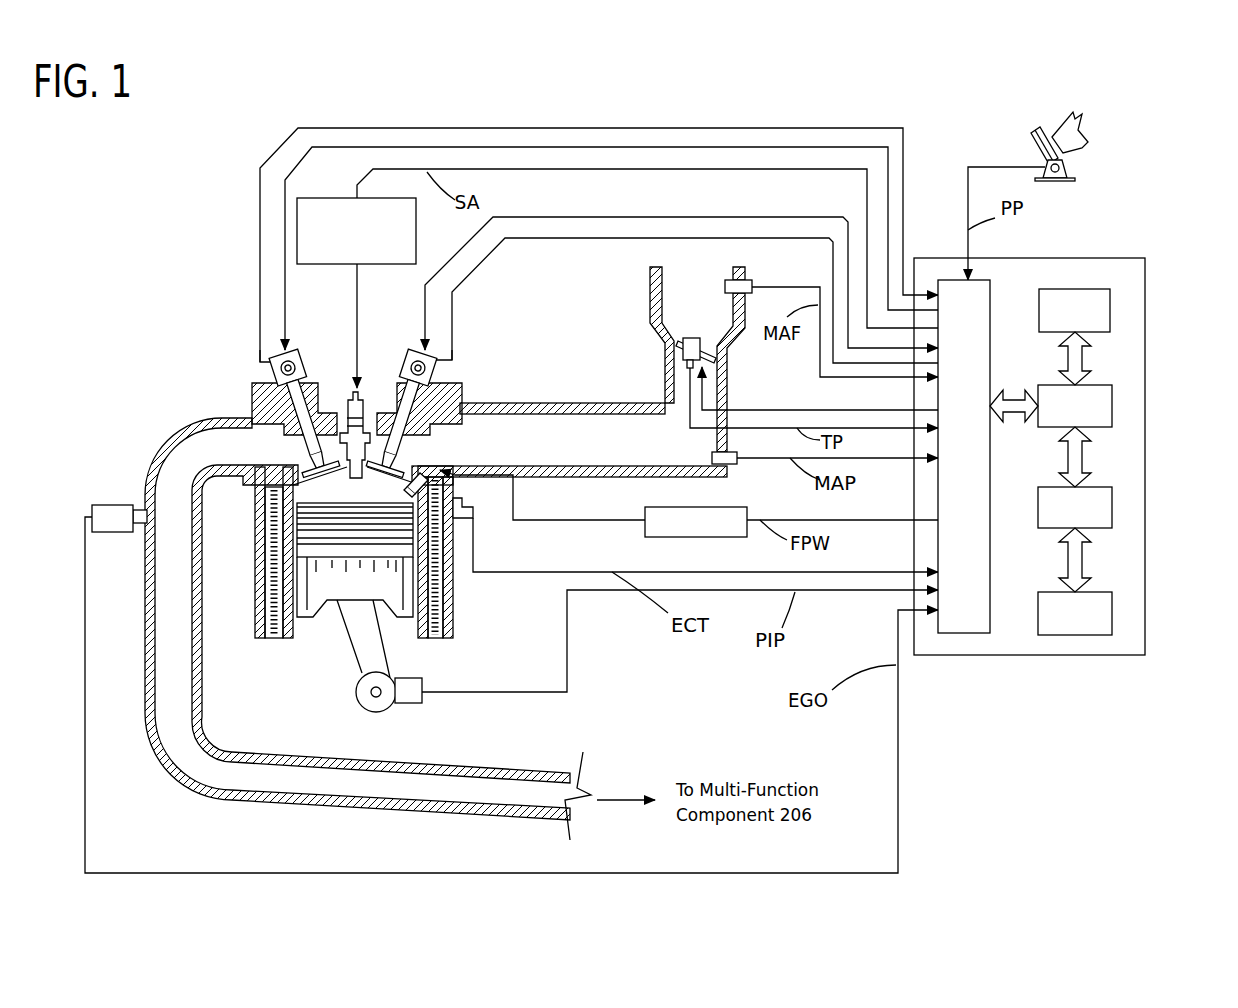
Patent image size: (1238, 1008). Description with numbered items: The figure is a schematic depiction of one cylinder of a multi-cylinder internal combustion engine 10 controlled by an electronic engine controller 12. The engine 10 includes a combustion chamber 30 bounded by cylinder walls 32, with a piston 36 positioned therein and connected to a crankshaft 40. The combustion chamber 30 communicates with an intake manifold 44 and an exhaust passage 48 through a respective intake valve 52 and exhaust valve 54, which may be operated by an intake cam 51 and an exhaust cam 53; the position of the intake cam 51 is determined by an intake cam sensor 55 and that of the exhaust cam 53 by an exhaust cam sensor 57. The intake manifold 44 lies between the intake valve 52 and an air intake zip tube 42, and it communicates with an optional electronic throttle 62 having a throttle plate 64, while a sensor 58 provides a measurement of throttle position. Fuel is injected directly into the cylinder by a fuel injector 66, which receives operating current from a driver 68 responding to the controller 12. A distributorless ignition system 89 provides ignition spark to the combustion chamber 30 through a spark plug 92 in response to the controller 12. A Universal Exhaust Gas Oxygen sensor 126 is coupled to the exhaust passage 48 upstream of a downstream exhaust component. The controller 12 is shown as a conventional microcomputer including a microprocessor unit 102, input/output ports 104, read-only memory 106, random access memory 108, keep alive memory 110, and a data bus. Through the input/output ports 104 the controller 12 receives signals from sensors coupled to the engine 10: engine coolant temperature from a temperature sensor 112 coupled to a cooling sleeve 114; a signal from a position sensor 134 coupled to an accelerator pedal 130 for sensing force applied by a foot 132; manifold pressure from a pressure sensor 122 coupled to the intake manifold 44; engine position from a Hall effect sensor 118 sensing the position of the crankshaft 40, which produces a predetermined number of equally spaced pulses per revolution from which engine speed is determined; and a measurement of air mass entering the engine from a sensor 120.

The internal combustion engine 10 is at (190, 340).
The electronic engine controller 12 is at (1137, 257).
The combustion chamber 30 is at (268, 579).
The cylinder walls 32 is at (293, 630).
The piston 36 is at (337, 590).
The crankshaft 40 is at (367, 710).
The air intake zip tube 42 is at (682, 314).
The intake manifold 44 is at (619, 456).
The exhaust passage 48 is at (207, 458).
The intake cam 51 is at (420, 352).
The intake valve 52 is at (402, 440).
The exhaust cam 53 is at (292, 352).
The exhaust valve 54 is at (262, 430).
The intake cam sensor 55 is at (434, 366).
The exhaust cam sensor 57 is at (268, 374).
The throttle position sensor 58 is at (681, 367).
The electronic throttle 62 is at (716, 346).
The throttle plate 64 is at (683, 341).
The fuel injector 66 is at (460, 481).
The driver 68 is at (668, 537).
The distributorless ignition system 89 is at (315, 198).
The spark plug 92 is at (364, 402).
The microprocessor unit 102 is at (1112, 398).
The input/output ports 104 is at (993, 287).
The read-only memory 106 is at (1112, 312).
The random access memory 108 is at (1112, 505).
The keep alive memory 110 is at (1112, 610).
The temperature sensor 112 is at (473, 520).
The cooling sleeve 114 is at (437, 602).
The Hall effect sensor 118 is at (410, 705).
The air mass sensor 120 is at (747, 282).
The pressure sensor 122 is at (737, 464).
The Universal Exhaust Gas Oxygen (UEGO) sensor 126 is at (92, 508).
The accelerator pedal 130 is at (1033, 140).
The foot 132 is at (1088, 135).
The position sensor 134 is at (1068, 168).